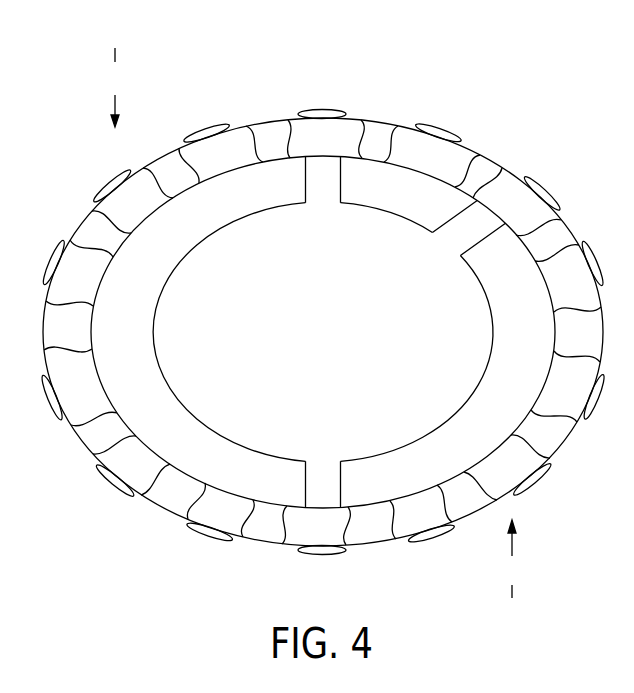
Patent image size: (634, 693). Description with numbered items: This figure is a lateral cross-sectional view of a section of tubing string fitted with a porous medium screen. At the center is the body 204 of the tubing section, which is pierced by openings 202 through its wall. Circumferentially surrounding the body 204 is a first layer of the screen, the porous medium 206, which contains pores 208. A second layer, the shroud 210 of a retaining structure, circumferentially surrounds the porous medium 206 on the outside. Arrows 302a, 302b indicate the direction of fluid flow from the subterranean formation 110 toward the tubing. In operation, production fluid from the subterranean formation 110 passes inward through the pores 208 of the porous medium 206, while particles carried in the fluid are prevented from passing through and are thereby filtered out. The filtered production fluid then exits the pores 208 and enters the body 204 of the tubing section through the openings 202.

The subterranean formation 110 is at (311, 327).
The openings 202 is at (322, 200).
The body 204 is at (162, 404).
The porous medium 206 is at (540, 448).
The pores 208 is at (488, 203).
The shroud 210 is at (322, 107).
The arrow 302a is at (116, 98).
The arrow 302b is at (512, 550).